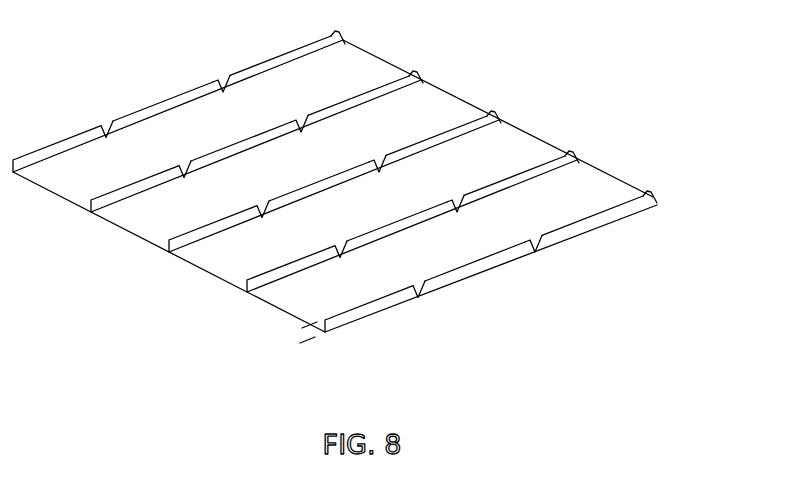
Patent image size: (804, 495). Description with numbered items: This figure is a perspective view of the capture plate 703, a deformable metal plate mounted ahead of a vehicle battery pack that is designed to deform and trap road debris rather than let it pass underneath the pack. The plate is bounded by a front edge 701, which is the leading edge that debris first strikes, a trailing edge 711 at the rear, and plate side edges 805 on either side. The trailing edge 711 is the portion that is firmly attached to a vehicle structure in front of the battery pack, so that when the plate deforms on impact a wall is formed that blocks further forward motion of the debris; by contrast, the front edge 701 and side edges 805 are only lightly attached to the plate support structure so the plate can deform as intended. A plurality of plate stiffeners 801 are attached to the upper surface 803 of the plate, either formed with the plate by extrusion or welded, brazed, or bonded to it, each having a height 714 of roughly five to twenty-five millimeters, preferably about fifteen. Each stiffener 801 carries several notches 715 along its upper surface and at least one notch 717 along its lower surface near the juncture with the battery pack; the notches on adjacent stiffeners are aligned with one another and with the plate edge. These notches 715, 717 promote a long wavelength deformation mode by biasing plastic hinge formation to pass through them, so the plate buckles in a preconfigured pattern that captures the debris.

The front edge 701 is at (333, 176).
The capture plate 703 is at (360, 201).
The trailing edge 711 is at (462, 87).
The height 714 is at (308, 305).
The notches 715 is at (339, 230).
The notch 717 is at (342, 54).
The plate stiffeners 801 is at (268, 203).
The upper surface 803 is at (289, 171).
The plate side edges 805 is at (104, 108).